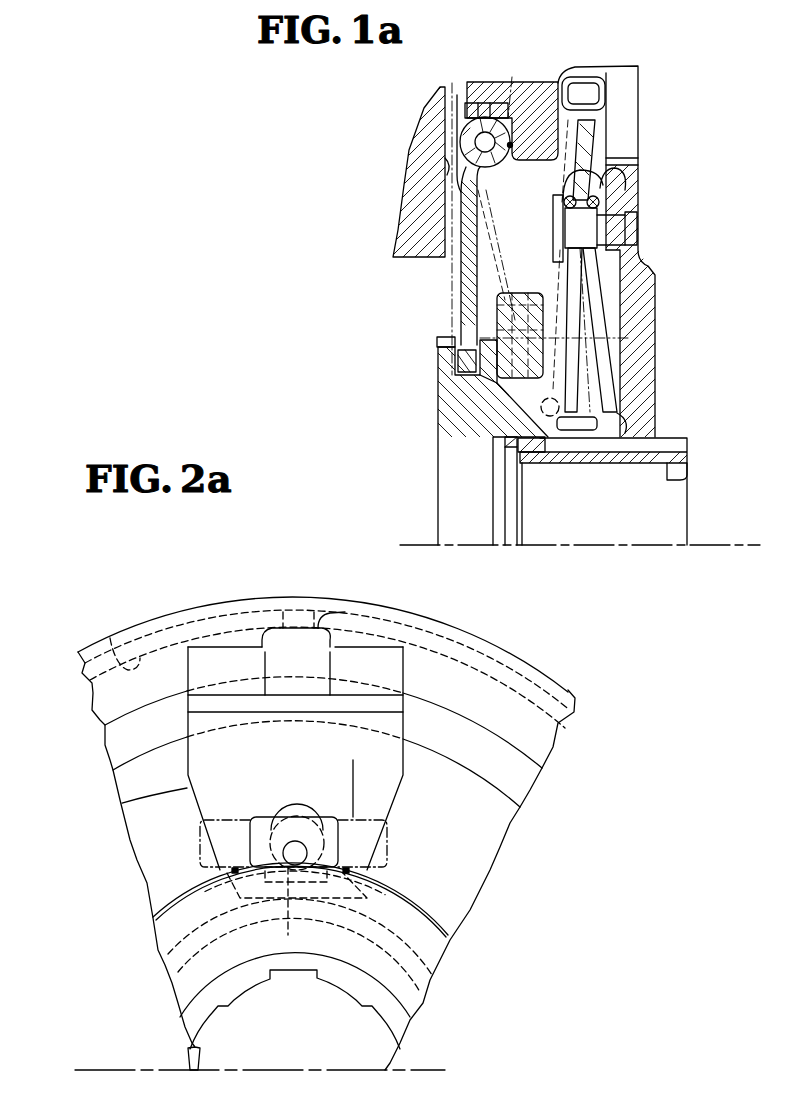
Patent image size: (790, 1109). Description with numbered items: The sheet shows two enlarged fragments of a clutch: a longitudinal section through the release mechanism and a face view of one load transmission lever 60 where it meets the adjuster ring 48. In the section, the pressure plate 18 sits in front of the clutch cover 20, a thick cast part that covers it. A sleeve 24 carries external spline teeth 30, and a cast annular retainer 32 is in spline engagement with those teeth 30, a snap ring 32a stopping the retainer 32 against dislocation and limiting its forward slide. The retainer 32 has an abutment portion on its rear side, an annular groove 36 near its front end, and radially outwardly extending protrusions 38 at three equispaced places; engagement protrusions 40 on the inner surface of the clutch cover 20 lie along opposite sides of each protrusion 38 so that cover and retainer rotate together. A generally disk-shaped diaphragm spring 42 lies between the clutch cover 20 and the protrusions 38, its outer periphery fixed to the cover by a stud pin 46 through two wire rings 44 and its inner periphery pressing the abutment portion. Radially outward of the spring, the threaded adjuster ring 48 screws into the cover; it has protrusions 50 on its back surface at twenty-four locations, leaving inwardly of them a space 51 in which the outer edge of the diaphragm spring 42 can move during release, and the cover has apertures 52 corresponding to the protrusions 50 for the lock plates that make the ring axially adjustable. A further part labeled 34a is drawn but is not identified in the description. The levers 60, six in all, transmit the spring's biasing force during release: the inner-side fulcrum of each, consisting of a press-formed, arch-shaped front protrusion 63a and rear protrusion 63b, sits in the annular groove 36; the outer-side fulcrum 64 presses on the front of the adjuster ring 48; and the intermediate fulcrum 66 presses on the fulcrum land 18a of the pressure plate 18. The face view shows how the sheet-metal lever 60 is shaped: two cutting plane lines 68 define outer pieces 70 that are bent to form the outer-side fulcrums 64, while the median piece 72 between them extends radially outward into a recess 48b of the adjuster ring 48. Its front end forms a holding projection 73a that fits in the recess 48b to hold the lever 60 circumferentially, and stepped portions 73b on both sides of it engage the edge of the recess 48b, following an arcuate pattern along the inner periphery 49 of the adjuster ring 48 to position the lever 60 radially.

In FIG. 1a, the pressure plate 18 is at (423, 242).
In FIG. 1a, the fulcrum land 18a is at (440, 166).
In FIG. 1a, the clutch cover 20 is at (612, 168).
In FIG. 1a, the sleeve 24 is at (690, 474).
In FIG. 1a, the external spline teeth 30 is at (666, 440).
In FIG. 1a, the retainer 32 is at (438, 388).
In FIG. 2a, the retainer 32 is at (168, 893).
In FIG. 1a, the snap ring 32a is at (545, 466).
In FIG. 1a, the seal 34a is at (560, 456).
In FIG. 1a, the annular groove 36 is at (457, 368).
In FIG. 1a, the protrusions 38 is at (508, 292).
In FIG. 2a, the protrusions 38 is at (262, 833).
In FIG. 1a, the engagement protrusions 40 is at (585, 357).
In FIG. 2a, the engagement protrusions 40 is at (205, 855).
In FIG. 1a, the diaphragm spring 42 is at (583, 280).
In FIG. 1a, the wire rings 44 is at (600, 184).
In FIG. 1a, the stud pin 46 is at (588, 233).
In FIG. 1a, the adjuster ring 48 is at (547, 113).
In FIG. 2a, the adjuster ring 48 is at (158, 620).
In FIG. 2a, the recess 48b is at (290, 612).
In FIG. 2a, the inner periphery 49 is at (110, 638).
In FIG. 1a, the protrusions 50 is at (606, 90).
In FIG. 1a, the space 51 is at (562, 133).
In FIG. 1a, the apertures 52 is at (640, 73).
In FIG. 1a, the lever 60 is at (461, 283).
In FIG. 2a, the lever 60 is at (122, 803).
In FIG. 1a, the front protrusion 63a is at (445, 342).
In FIG. 2a, the front protrusion 63a is at (217, 897).
In FIG. 1a, the rear protrusion 63b is at (490, 365).
In FIG. 2a, the rear protrusion 63b is at (283, 935).
In FIG. 1a, the outer-side fulcrum 64 is at (511, 150).
In FIG. 1a, the intermediate fulcrum 66 is at (438, 200).
In FIG. 2a, the cutting plane lines 68 is at (265, 692).
In FIG. 2a, the outer pieces 70 is at (222, 692).
In FIG. 1a, the median piece 72 is at (512, 77).
In FIG. 2a, the median piece 72 is at (355, 628).
In FIG. 2a, the holding projection 73a is at (300, 645).
In FIG. 2a, the stepped portions 73b is at (270, 615).